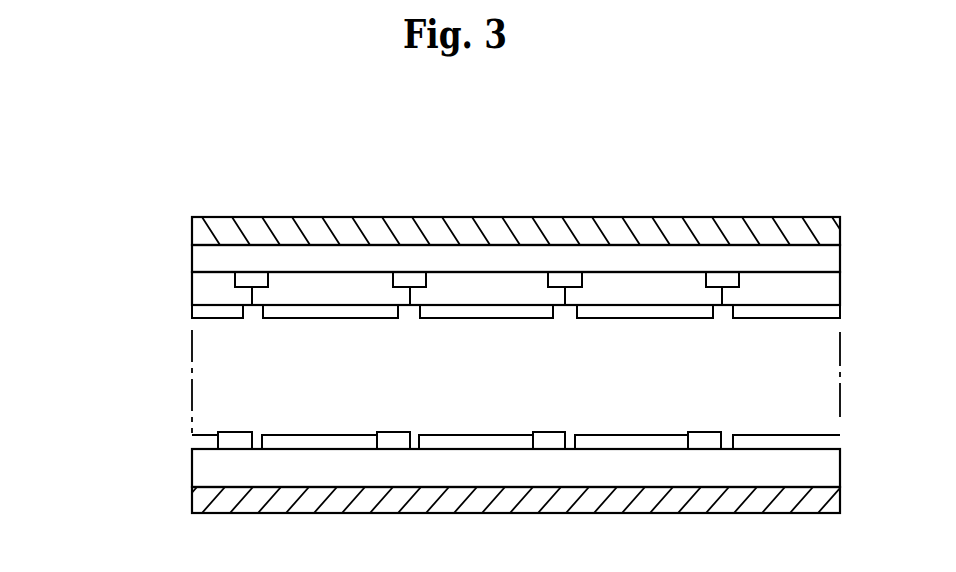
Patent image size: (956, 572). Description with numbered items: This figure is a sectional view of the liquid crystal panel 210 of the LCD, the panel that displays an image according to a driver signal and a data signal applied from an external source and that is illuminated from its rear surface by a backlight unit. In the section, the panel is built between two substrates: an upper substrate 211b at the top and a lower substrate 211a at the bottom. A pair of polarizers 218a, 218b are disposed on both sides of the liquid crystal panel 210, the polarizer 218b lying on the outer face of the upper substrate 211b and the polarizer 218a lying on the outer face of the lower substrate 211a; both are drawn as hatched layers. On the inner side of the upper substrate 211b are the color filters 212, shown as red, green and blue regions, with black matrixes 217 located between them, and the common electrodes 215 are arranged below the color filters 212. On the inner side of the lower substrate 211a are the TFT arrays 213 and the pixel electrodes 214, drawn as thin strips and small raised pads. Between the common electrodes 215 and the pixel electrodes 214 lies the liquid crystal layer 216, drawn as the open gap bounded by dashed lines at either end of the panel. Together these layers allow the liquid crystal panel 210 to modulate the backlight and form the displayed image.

The liquid crystal panel 210 is at (662, 198).
The polarizer 218b is at (245, 228).
The upper substrate 211b is at (390, 253).
The color filters 212 is at (303, 278).
The black matrixes 217 is at (569, 280).
The common electrodes 215 is at (277, 317).
The liquid crystal layer 216 is at (202, 362).
The pixel electrodes 214 is at (302, 437).
The TFT arrays 213 is at (235, 437).
The lower substrate 211a is at (202, 462).
The polarizer 218a is at (200, 502).